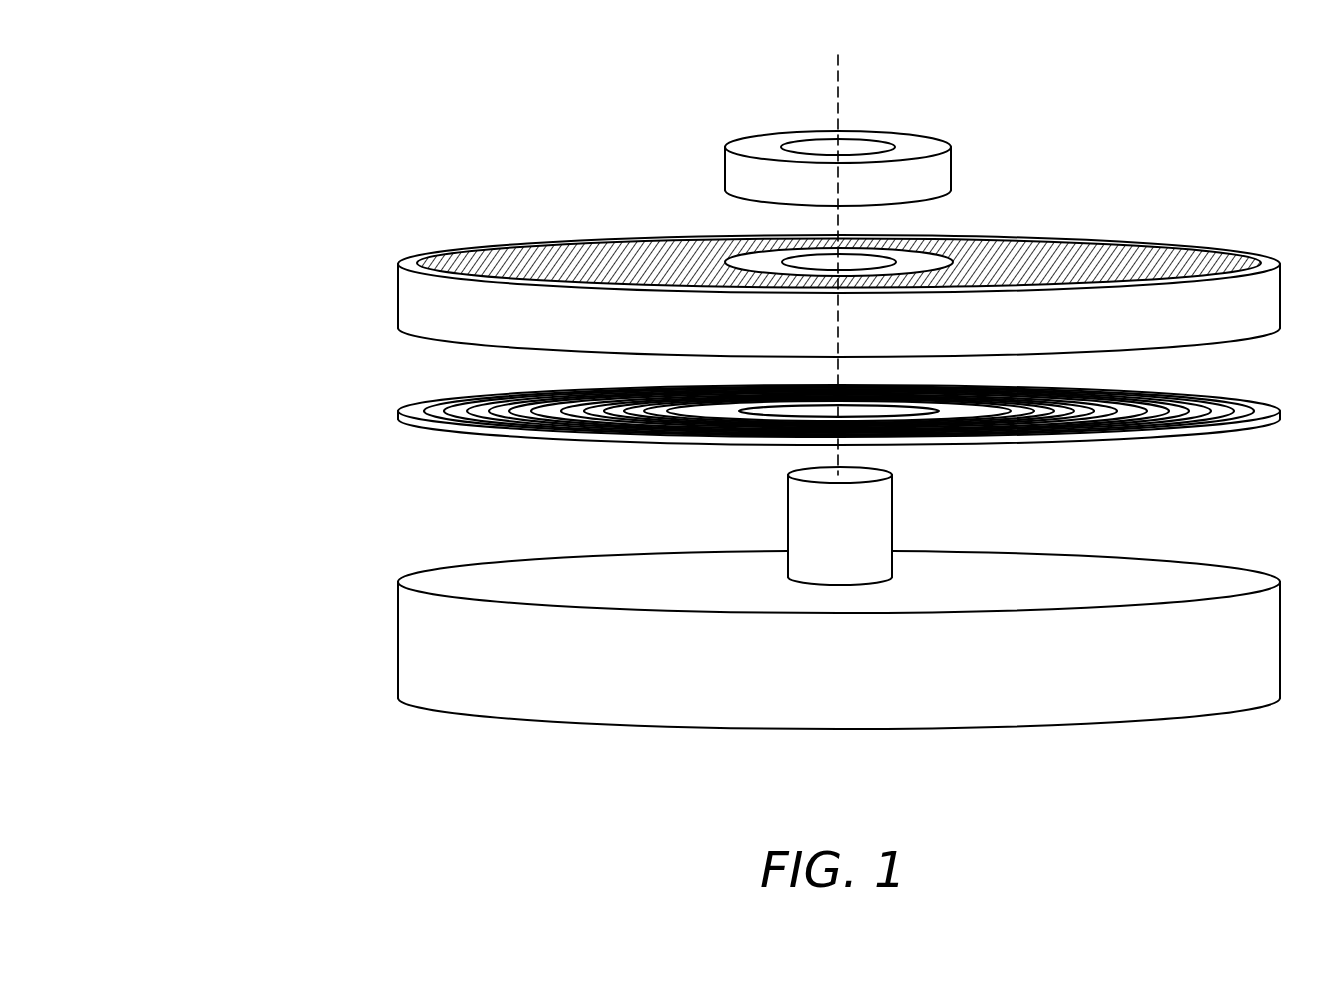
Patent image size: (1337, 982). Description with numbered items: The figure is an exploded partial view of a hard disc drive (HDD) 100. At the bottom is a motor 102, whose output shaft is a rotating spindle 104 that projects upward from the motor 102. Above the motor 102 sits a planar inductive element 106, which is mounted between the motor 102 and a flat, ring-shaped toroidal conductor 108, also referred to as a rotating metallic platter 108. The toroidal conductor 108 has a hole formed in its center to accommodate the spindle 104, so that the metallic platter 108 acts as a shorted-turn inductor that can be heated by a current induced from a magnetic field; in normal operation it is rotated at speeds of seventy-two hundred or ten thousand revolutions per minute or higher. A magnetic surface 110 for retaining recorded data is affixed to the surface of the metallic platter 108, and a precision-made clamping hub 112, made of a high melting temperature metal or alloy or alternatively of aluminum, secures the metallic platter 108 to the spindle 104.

The hard disc drive 100 is at (1258, 150).
The motor 102 is at (397, 633).
The rotating spindle 104 is at (788, 518).
The planar inductive element 106 is at (398, 412).
The toroidal conductor 108 is at (397, 293).
The magnetic surface 110 is at (487, 248).
The clamping hub 112 is at (725, 175).